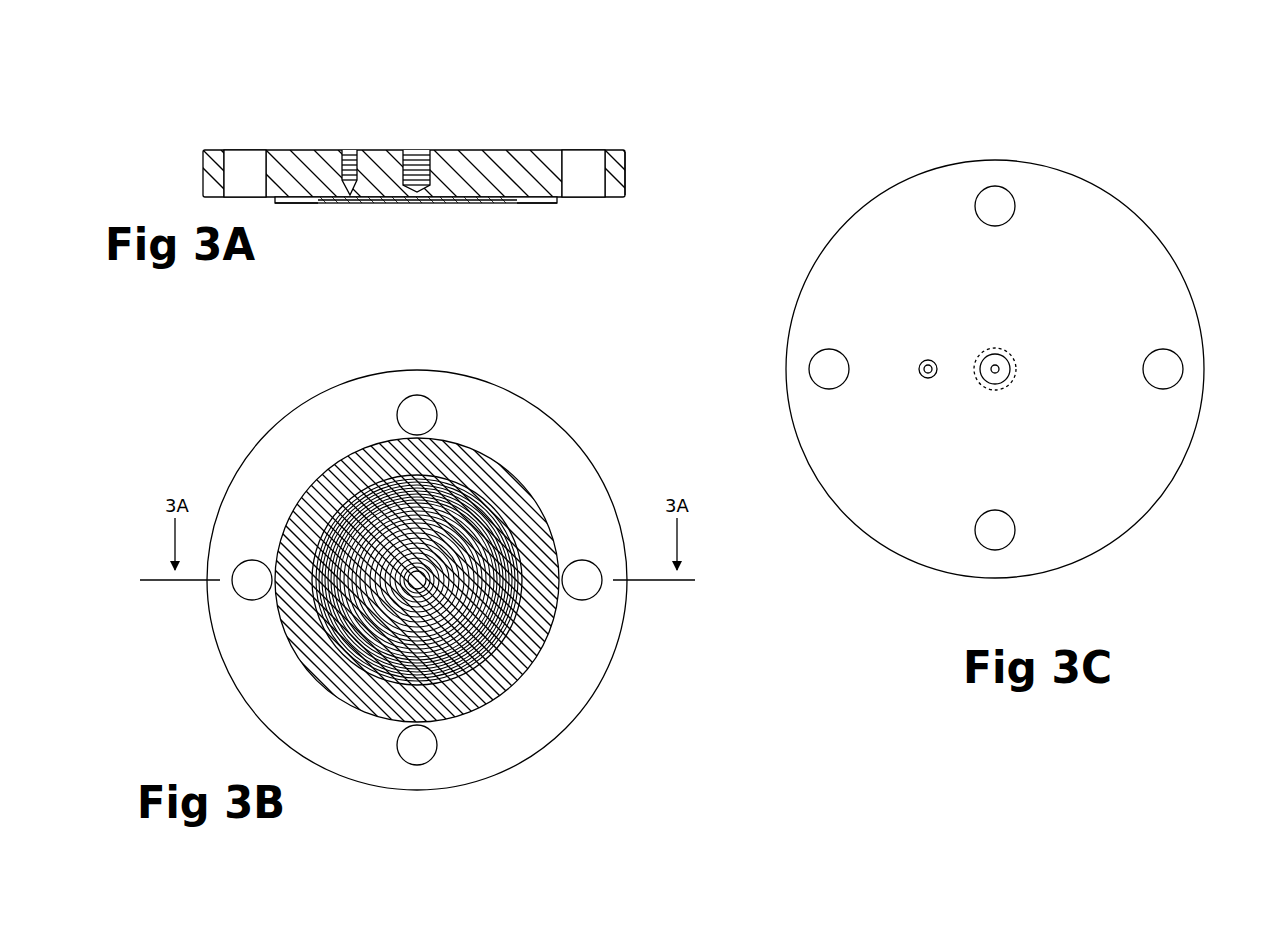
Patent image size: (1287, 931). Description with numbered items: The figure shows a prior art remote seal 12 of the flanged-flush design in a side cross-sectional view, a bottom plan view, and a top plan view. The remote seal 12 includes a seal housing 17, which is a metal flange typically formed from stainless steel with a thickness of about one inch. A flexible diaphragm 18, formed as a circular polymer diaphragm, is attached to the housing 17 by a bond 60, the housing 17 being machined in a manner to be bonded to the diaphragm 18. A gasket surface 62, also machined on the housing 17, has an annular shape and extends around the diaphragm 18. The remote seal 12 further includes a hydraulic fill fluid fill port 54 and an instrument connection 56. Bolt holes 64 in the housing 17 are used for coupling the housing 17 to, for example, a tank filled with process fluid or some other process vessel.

In FIG. 3A, the remote seal 12 is at (240, 93).
In FIG. 3B, the remote seal 12 is at (223, 677).
In FIG. 3C, the remote seal 12 is at (1167, 205).
In FIG. 3A, the seal housing 17 is at (628, 167).
In FIG. 3A, the flexible diaphragm 18 is at (455, 203).
In FIG. 3B, the flexible diaphragm 18 is at (473, 520).
In FIG. 3A, the fill port 54 is at (350, 160).
In FIG. 3C, the fill port 54 is at (928, 378).
In FIG. 3A, the instrument connection 56 is at (420, 150).
In FIG. 3C, the instrument connection 56 is at (998, 378).
In FIG. 3A, the bond 60 is at (320, 203).
In FIG. 3A, the gasket surface 62 is at (537, 205).
In FIG. 3B, the gasket surface 62 is at (465, 460).
In FIG. 3A, the bolt holes 64 is at (238, 160).
In FIG. 3B, the bolt holes 64 is at (417, 410).
In FIG. 3C, the bolt holes 64 is at (993, 200).